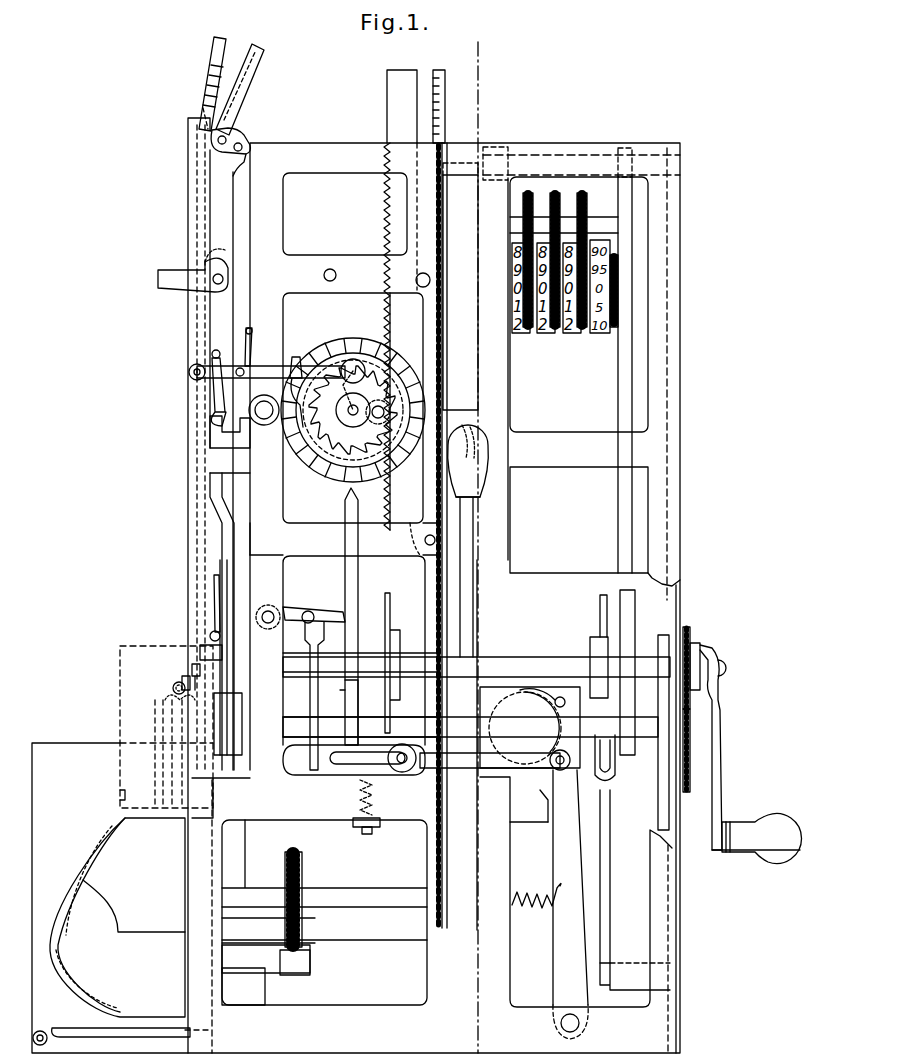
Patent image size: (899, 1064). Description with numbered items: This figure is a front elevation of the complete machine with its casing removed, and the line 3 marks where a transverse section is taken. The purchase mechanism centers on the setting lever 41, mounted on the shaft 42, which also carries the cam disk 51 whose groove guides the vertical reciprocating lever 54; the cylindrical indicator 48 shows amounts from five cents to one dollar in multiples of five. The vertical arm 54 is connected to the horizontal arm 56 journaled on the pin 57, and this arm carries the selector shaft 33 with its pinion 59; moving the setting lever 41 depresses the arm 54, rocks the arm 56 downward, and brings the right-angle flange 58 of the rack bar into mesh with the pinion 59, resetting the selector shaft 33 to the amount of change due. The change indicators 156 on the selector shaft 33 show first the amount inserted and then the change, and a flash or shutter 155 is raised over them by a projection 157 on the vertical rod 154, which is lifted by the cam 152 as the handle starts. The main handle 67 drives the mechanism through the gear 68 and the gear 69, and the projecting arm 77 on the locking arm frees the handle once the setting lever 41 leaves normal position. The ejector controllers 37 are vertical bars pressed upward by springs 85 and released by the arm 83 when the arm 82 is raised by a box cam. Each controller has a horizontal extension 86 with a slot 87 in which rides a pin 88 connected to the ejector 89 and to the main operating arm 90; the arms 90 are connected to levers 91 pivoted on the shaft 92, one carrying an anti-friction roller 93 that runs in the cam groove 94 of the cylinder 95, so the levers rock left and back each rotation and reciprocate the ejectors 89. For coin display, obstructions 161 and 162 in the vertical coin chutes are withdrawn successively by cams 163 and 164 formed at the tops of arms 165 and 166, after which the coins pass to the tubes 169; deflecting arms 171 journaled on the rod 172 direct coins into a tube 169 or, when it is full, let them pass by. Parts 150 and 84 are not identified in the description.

The section line 3 is at (476, 537).
The vertical rod 154 is at (231, 106).
The cylindrical indicator 48 is at (457, 163).
The pinion 59 is at (390, 214).
The vertical reciprocating lever 54 is at (384, 516).
The setting lever 41 is at (475, 607).
The dial ring 150 is at (389, 358).
The horizontal arm 56 is at (305, 464).
The selector shaft 33 is at (339, 362).
The right angle flange 58 is at (368, 441).
The flash 155 is at (353, 359).
The projection 157 is at (290, 372).
The change indicators 156 is at (250, 344).
The obstruction 161 is at (215, 391).
The cam 163 is at (210, 432).
The pin 57 is at (264, 421).
The arm 165 is at (222, 530).
The ejector controllers 37 is at (348, 576).
The arm 83 is at (323, 612).
The arm 82 is at (310, 692).
The rod end 84 is at (346, 688).
The cam disk 51 is at (389, 622).
The shaft 42 is at (503, 659).
The anti-friction roller 93 is at (566, 690).
The cam groove 94 is at (559, 707).
The cylinder 95 is at (486, 700).
The projecting arm 77 is at (652, 735).
The gear 68 is at (689, 637).
The gear 69 is at (688, 760).
The main handle 67 is at (723, 740).
The slot 87 is at (340, 765).
The horizontal extension 86 is at (390, 772).
The pin 88 is at (404, 764).
The main operating arm 90 is at (472, 762).
The ejector 89 is at (252, 835).
The springs 85 is at (374, 808).
The levers 91 is at (562, 885).
The shaft 92 is at (580, 1024).
The tubes 169 is at (130, 733).
The obstruction 162 is at (212, 635).
The cam 164 is at (200, 648).
The deflecting arms 171 is at (192, 670).
The rod 172 is at (189, 681).
The arm 166 is at (213, 692).
The cam 152 is at (241, 711).